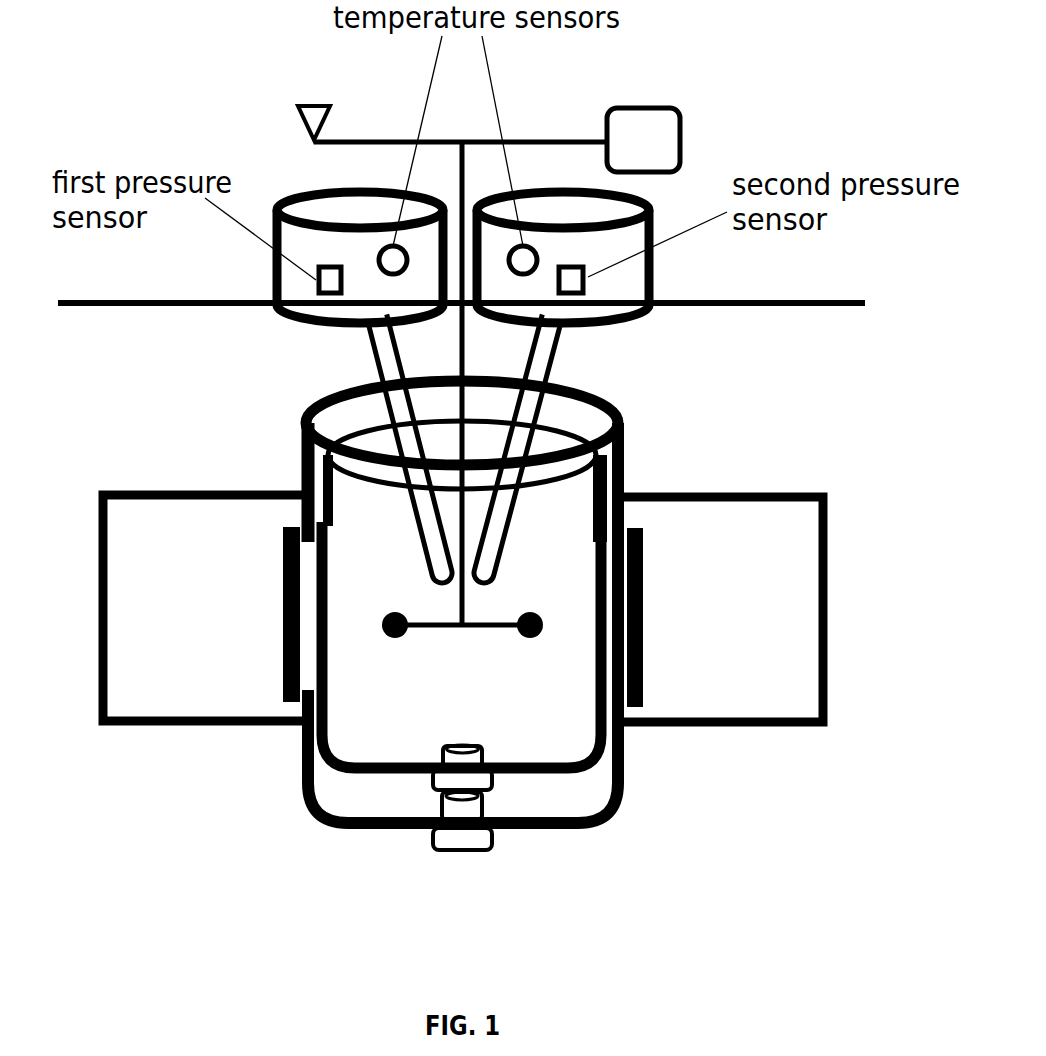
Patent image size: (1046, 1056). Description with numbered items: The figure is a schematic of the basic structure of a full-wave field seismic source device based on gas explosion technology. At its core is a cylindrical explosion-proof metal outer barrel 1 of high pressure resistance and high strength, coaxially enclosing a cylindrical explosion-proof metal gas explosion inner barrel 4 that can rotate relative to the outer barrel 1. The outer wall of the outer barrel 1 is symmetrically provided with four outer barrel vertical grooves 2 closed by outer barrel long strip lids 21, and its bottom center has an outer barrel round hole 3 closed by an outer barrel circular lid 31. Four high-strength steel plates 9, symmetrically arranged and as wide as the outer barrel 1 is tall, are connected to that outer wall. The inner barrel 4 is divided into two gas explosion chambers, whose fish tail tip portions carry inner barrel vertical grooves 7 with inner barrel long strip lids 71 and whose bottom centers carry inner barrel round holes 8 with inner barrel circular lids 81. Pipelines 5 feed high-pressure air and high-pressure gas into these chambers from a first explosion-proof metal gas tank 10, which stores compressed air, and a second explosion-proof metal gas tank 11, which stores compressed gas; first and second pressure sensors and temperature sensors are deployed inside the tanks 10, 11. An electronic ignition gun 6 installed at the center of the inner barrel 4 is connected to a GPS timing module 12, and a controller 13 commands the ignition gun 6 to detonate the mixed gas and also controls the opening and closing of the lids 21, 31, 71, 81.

The explosion-proof metal outer barrel 1 is at (302, 450).
The outer barrel vertical grooves 2 is at (237, 614).
The outer barrel long strip lids 21 is at (283, 608).
The outer barrel round hole 3 is at (440, 807).
The outer barrel circular lid 31 is at (493, 837).
The explosion-proof metal gas explosion inner barrel 4 is at (600, 478).
The pipelines 5 is at (397, 368).
The electronic ignition gun 6 is at (462, 427).
The inner barrel vertical grooves 7 is at (668, 617).
The inner barrel long strip lids 71 is at (612, 590).
The inner barrel round holes 8 is at (442, 752).
The inner barrel circular lids 81 is at (503, 763).
The high-strength steel plates 9 is at (98, 613).
The first explosion-proof metal gas tank 10 is at (357, 258).
The second explosion-proof metal gas tank 11 is at (563, 258).
The GPS timing module 12 is at (298, 119).
The controller 13 is at (643, 141).